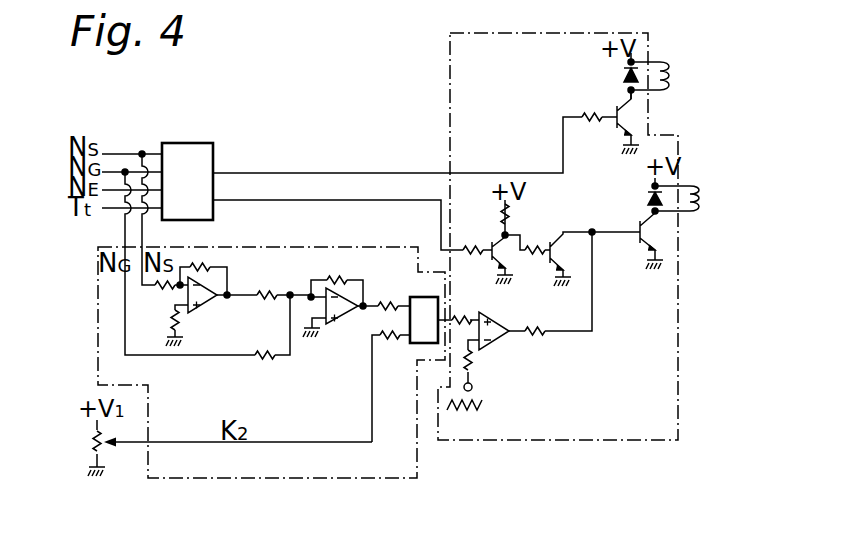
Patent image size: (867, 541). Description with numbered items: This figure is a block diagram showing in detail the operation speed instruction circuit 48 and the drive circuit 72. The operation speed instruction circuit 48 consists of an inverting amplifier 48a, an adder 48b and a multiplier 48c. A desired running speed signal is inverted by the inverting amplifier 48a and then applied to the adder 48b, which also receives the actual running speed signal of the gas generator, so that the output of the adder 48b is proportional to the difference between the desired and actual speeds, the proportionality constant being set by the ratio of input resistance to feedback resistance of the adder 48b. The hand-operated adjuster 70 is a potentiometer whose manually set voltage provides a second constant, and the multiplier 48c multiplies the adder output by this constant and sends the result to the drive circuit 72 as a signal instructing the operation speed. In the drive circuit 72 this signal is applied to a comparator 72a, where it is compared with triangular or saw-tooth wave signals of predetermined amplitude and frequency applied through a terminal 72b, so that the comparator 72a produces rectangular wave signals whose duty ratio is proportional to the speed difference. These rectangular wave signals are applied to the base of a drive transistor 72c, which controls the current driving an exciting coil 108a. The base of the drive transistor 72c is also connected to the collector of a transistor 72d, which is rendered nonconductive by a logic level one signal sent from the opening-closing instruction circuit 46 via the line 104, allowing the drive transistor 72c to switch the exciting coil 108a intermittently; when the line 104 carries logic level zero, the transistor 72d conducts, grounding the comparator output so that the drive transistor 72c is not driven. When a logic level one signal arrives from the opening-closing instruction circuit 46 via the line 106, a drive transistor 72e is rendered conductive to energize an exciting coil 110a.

The opening-closing instruction circuit 46 is at (212, 143).
The line 106 is at (346, 173).
The line 104 is at (343, 200).
The operation speed instruction circuit 48 is at (416, 464).
The inverting amplifier 48a is at (218, 301).
The adder 48b is at (342, 330).
The multiplier 48c is at (410, 296).
The hand-operated adjuster 70 is at (96, 441).
The drive circuit 72 is at (452, 62).
The comparator 72a is at (500, 339).
The terminal 72b is at (472, 390).
The drive transistor 72c is at (635, 243).
The transistor 72d is at (545, 266).
The drive transistor 72e is at (613, 132).
The exciting coil 108a is at (692, 186).
The exciting coil 110a is at (672, 50).